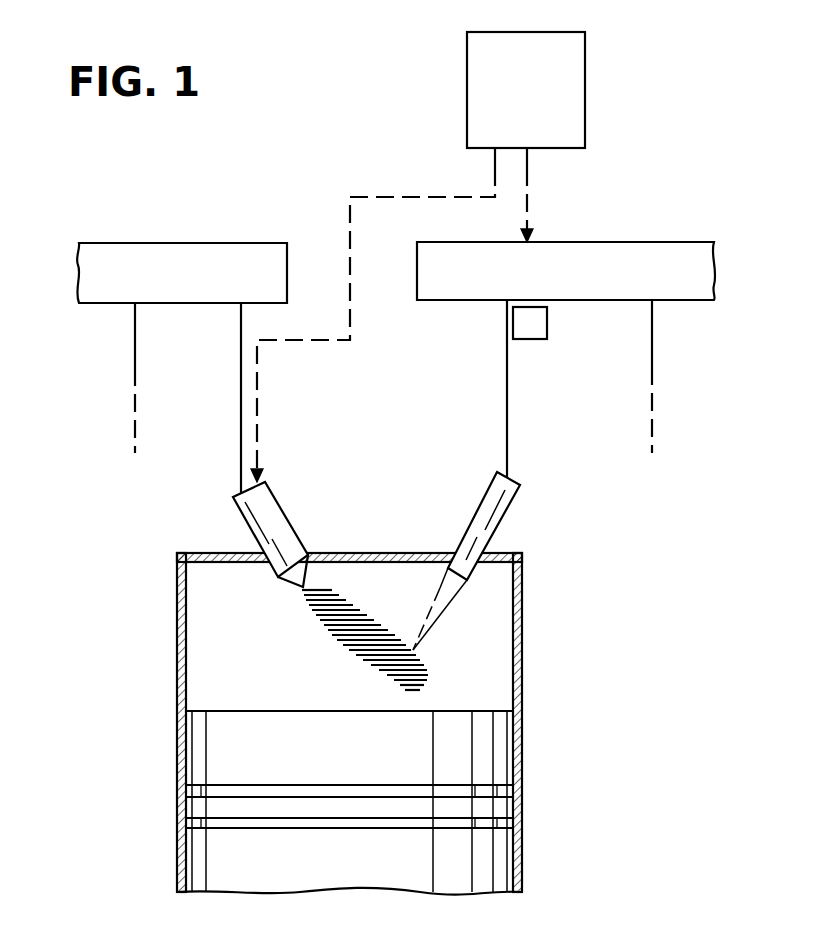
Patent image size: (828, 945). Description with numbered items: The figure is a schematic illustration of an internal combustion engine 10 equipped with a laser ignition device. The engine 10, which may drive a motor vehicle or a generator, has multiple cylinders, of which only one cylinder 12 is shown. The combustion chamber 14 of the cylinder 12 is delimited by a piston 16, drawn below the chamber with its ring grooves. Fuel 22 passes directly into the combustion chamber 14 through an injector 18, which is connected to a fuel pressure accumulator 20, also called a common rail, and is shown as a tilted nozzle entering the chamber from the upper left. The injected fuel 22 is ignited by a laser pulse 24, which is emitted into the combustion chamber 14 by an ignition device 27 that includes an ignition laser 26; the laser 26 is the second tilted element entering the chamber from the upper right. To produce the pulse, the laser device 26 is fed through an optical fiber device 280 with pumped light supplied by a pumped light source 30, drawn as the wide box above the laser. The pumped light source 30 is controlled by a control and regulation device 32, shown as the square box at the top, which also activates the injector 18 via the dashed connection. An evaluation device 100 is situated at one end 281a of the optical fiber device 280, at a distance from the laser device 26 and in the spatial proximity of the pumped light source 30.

The internal combustion engine 10 is at (582, 773).
The cylinder 12 is at (522, 664).
The combustion chamber 14 is at (222, 634).
The piston 16 is at (222, 751).
The injector 18 is at (270, 518).
The fuel pressure accumulator 20 is at (185, 258).
The fuel 22 is at (355, 617).
The laser pulse 24 is at (440, 614).
The ignition laser 26 is at (490, 517).
The ignition device 27 is at (630, 118).
The pumped light source 30 is at (676, 258).
The control and regulation device 32 is at (490, 92).
The evaluation device 100 is at (528, 330).
The optical fiber device 280 is at (510, 425).
The end of optical fiber device 281a is at (498, 324).